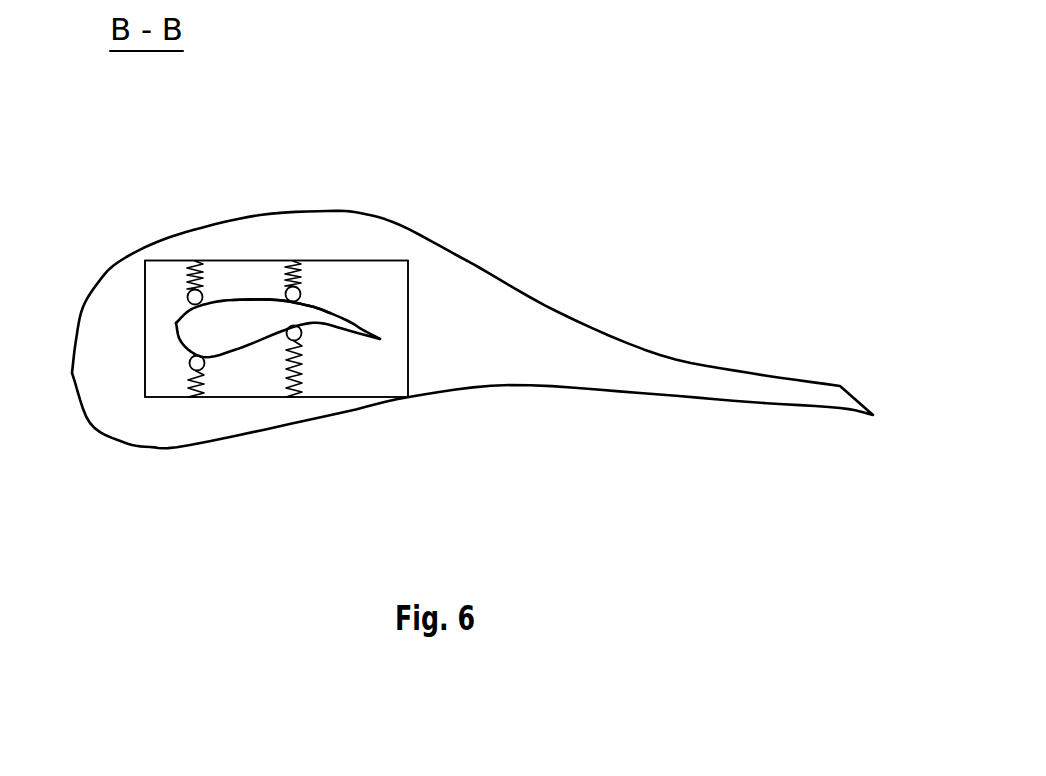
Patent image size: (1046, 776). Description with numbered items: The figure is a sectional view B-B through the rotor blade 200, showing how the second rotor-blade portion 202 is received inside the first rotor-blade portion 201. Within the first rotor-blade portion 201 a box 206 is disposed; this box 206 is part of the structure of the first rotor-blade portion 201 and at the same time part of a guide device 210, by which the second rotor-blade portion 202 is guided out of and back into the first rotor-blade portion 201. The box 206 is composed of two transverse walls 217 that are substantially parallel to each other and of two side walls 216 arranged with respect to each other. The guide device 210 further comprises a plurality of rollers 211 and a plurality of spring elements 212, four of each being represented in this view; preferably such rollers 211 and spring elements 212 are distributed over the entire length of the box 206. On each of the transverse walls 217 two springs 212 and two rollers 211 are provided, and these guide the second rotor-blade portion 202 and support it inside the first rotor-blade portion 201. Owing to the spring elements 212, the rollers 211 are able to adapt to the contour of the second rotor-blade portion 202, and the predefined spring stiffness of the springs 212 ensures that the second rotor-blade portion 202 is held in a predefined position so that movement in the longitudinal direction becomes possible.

The rotor blade 200 is at (600, 118).
The first rotor-blade portion 201 is at (540, 297).
The second rotor-blade portion 202 is at (176, 322).
The box 206 is at (390, 260).
The guide device 210 is at (316, 296).
The rollers 211 is at (301, 289).
The spring elements 212 is at (202, 277).
The side walls 216 is at (145, 357).
The transverse walls 217 is at (175, 258).